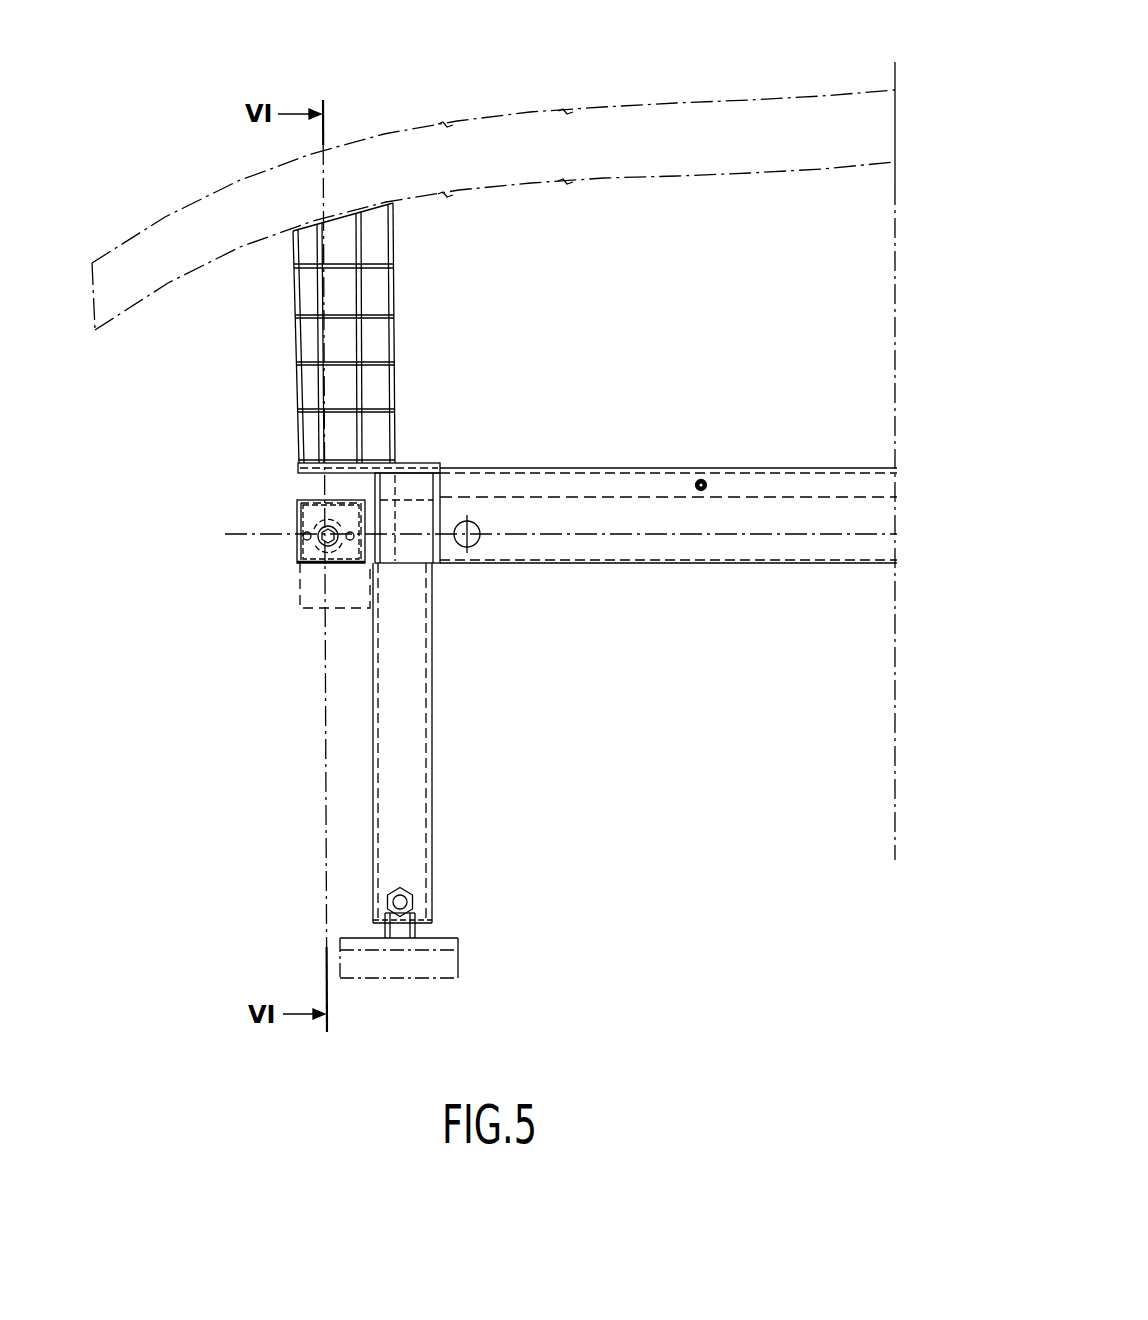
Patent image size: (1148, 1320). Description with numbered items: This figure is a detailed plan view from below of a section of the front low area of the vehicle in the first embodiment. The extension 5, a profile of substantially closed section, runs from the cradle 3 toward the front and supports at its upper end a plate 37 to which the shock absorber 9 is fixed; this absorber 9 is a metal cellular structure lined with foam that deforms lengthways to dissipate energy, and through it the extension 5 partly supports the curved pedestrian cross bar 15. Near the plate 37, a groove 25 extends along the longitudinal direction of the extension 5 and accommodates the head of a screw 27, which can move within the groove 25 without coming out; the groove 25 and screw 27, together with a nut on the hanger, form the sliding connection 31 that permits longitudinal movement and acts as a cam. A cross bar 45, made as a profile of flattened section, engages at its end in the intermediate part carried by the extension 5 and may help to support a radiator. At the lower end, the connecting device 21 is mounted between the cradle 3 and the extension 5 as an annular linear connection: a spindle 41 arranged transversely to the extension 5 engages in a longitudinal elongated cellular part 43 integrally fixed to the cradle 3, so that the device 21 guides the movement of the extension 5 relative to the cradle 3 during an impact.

The lower bumper cross bar 15 is at (727, 100).
The shock absorber 9 is at (396, 338).
The plate 37 is at (415, 463).
The cross bar 45 is at (645, 468).
The groove 25 is at (342, 512).
The screw 27 is at (320, 527).
The sliding connection 31 is at (278, 556).
The extension 5 is at (435, 746).
The spindle 41 is at (407, 889).
The elongated cellular part 43 is at (412, 934).
The cradle 3 is at (458, 958).
The connecting device 21 is at (352, 915).